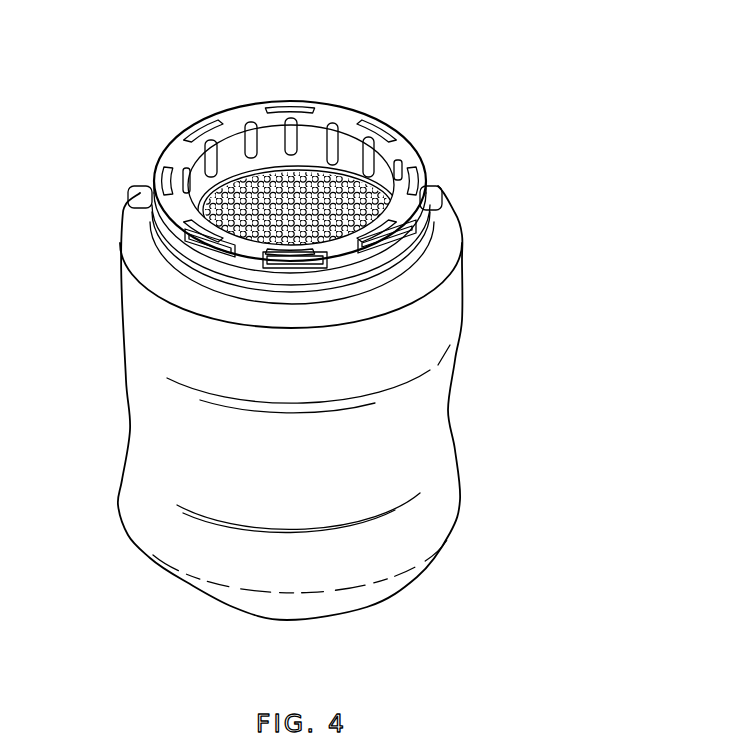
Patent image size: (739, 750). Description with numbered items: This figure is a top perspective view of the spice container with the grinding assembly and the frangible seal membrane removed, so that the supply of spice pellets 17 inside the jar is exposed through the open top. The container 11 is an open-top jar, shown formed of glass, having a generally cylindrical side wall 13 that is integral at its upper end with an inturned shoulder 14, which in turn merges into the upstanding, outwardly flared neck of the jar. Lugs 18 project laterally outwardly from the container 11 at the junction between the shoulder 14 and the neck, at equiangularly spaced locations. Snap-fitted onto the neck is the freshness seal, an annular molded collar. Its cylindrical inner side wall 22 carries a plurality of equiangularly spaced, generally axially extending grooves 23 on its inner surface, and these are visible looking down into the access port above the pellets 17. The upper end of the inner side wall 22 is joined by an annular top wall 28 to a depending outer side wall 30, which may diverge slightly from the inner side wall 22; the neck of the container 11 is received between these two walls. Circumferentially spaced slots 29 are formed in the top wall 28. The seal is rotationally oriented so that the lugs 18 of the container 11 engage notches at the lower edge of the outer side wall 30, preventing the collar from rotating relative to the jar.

The container 11 is at (509, 313).
The side wall 13 is at (137, 371).
The shoulder 14 is at (440, 243).
The spice pellets 17 is at (365, 203).
The lugs 18 is at (128, 200).
The inner side wall 22 is at (350, 147).
The grooves 23 is at (282, 130).
The top wall 28 is at (385, 132).
The slots 29 is at (372, 258).
The outer side wall 30 is at (260, 278).